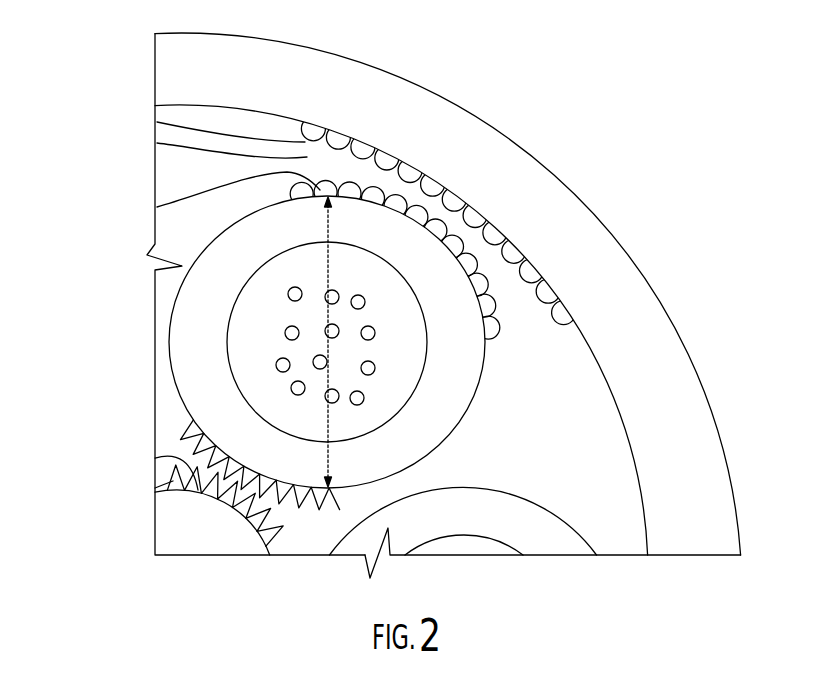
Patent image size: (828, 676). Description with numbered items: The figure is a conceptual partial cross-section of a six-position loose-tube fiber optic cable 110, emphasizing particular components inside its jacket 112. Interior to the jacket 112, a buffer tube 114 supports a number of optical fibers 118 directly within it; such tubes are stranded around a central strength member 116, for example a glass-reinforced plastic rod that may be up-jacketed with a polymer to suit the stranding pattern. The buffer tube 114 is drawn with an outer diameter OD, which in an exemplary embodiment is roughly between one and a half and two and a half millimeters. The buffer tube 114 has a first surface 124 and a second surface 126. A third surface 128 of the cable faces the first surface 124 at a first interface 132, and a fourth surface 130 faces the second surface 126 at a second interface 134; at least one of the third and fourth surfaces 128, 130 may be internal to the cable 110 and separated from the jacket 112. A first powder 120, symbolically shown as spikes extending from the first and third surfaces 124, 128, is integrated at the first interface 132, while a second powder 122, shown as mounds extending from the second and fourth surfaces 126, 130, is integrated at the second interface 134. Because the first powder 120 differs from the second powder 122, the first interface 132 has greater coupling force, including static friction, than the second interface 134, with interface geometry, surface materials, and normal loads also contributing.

The fiber optic cable 110 is at (678, 153).
The jacket 112 is at (698, 367).
The buffer tube 114 is at (193, 380).
The central strength member 116 is at (175, 527).
The optical fibers 118 is at (287, 296).
The first powder 120 is at (190, 440).
The second powder 122 is at (305, 142).
The first surface 124 is at (165, 450).
The second surface 126 is at (160, 207).
The third surface 128 is at (187, 456).
The fourth surface 130 is at (160, 143).
The first interface 132 is at (285, 512).
The second interface 134 is at (503, 293).
The outer diameter OD is at (328, 274).